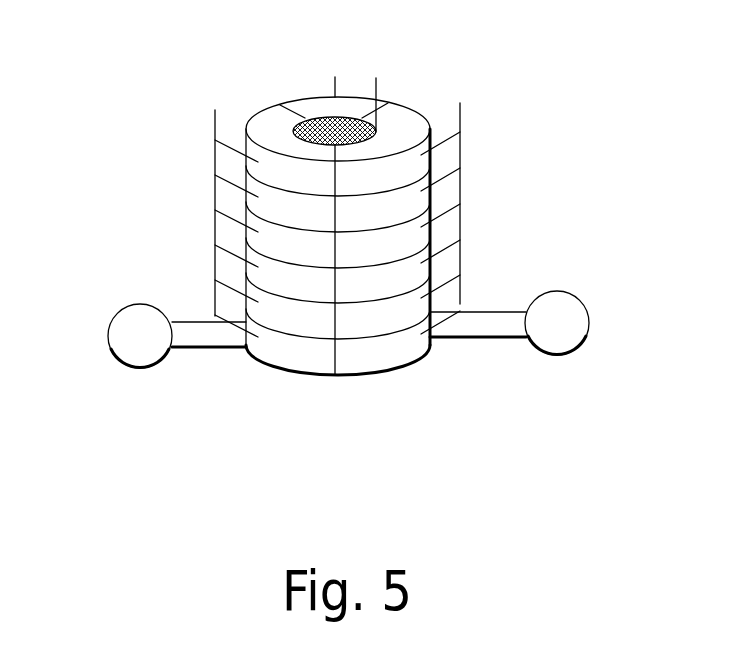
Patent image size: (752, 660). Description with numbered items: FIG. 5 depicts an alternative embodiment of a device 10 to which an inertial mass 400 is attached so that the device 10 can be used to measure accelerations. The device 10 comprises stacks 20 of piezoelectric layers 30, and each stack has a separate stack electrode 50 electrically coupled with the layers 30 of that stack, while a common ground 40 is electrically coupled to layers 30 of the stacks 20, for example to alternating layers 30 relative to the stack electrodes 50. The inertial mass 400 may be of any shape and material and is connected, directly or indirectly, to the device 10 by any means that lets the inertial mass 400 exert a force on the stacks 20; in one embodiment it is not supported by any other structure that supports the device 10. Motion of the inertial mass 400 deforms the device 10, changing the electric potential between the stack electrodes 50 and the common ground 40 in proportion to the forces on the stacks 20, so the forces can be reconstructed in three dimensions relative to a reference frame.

The device 10 is at (286, 402).
The stack 20 is at (412, 162).
The piezoelectric layer 30 is at (263, 272).
The common ground 40 is at (213, 128).
The stack electrode 50 is at (378, 84).
The inertial mass 400 is at (557, 292).